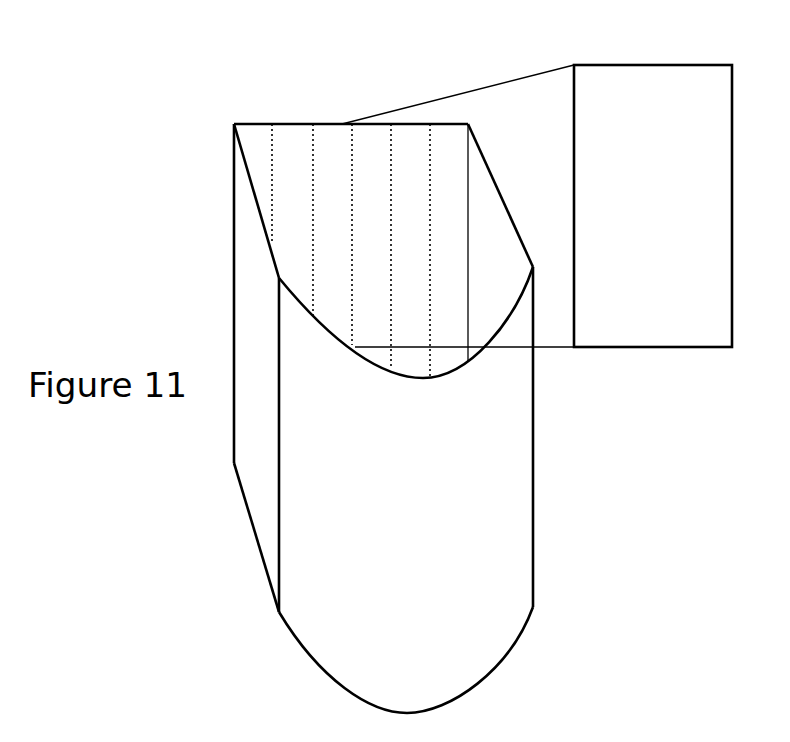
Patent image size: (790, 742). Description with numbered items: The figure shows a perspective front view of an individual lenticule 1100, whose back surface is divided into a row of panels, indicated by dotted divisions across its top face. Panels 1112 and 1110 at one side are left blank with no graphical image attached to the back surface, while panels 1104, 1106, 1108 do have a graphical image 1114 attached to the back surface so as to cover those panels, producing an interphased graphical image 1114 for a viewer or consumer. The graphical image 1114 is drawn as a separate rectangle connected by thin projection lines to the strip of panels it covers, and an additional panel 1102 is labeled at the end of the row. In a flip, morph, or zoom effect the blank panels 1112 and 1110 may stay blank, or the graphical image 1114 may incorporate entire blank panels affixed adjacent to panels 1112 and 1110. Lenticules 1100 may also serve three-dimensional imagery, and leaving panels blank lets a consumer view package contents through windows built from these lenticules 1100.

The lenticule 1100 is at (186, 214).
The first cutting region 1102 is at (452, 137).
The panel 1104 is at (403, 137).
The panel 1106 is at (367, 143).
The panel 1108 is at (332, 140).
The panel 1110 is at (293, 138).
The panel 1112 is at (253, 135).
The graphical image 1114 is at (668, 322).